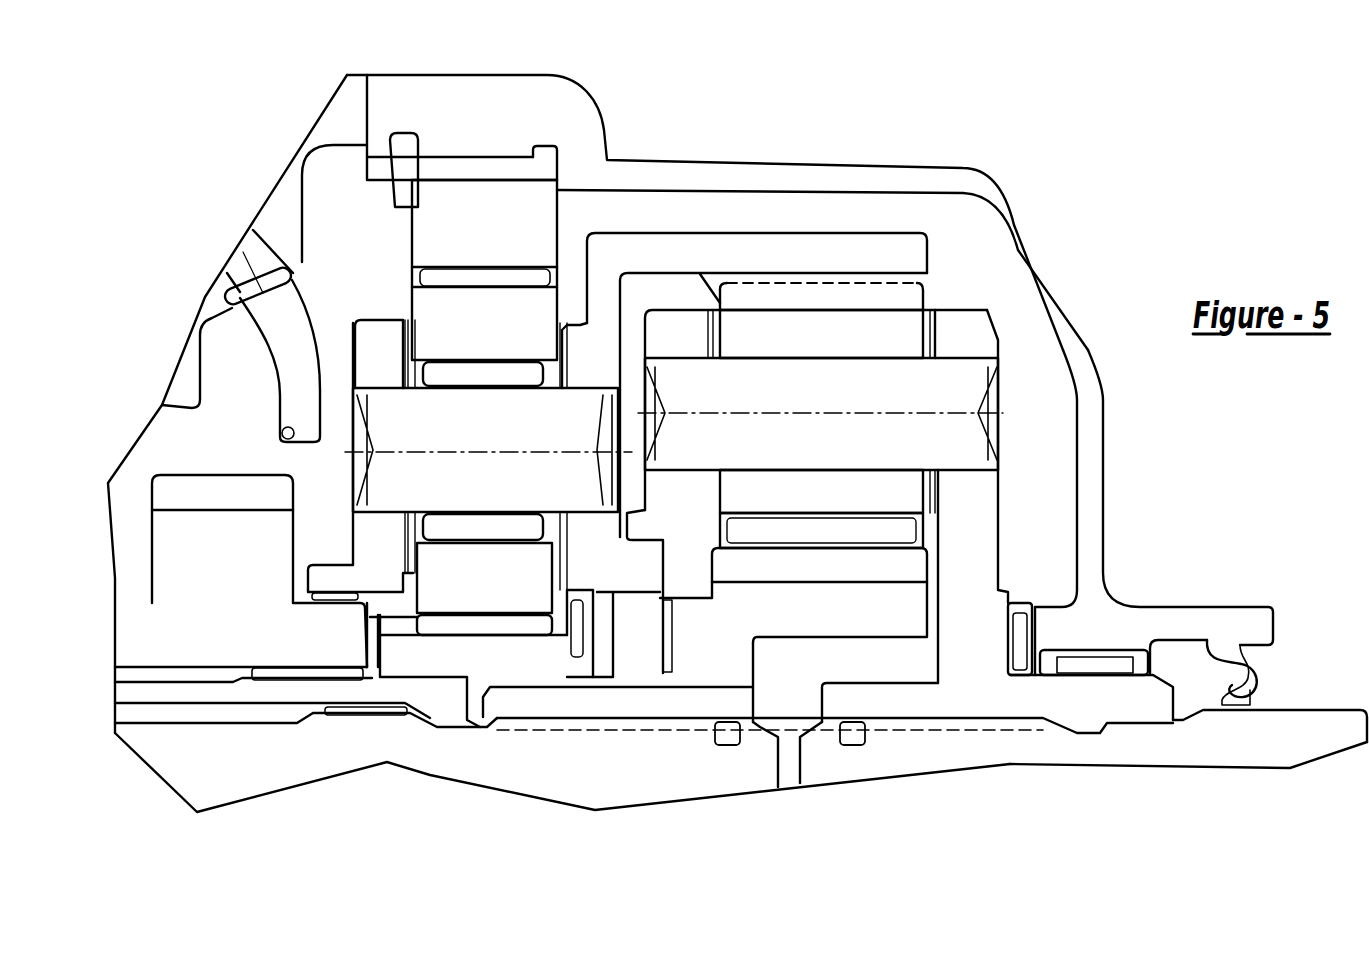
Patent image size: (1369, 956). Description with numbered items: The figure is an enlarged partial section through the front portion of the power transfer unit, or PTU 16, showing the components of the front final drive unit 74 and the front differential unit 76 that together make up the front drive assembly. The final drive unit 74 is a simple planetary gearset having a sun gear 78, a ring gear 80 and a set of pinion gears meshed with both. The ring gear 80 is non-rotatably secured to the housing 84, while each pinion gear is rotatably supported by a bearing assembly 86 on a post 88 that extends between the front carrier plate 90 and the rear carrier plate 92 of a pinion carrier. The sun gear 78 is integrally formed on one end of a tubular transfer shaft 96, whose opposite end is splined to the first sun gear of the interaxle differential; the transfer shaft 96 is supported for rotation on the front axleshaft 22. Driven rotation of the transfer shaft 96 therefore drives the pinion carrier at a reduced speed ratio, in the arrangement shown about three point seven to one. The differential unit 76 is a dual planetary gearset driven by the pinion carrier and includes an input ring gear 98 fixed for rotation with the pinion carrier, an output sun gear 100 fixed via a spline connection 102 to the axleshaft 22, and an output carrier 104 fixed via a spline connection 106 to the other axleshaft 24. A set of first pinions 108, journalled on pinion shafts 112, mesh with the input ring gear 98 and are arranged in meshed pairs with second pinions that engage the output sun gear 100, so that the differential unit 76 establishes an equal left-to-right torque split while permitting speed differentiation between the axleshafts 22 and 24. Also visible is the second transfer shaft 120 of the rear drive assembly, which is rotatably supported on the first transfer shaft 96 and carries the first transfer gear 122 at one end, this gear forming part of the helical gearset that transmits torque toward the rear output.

The PTU 16 is at (1018, 183).
The front axleshaft 22 is at (305, 750).
The axleshaft 24 is at (1303, 740).
The final drive unit 74 is at (493, 180).
The differential unit 76 is at (870, 236).
The sun gear 78 is at (443, 678).
The ring gear 80 is at (537, 225).
The housing 84 is at (1070, 340).
The bearing assembly 86 is at (478, 374).
The post 88 is at (497, 499).
The front carrier plate 90 is at (357, 533).
The rear carrier plate 92 is at (633, 642).
The tubular transfer shaft 96 is at (190, 692).
The input ring gear 98 is at (748, 257).
The output sun gear 100 is at (788, 602).
The spline connection 102 is at (677, 728).
The output carrier 104 is at (978, 537).
The spline connection 106 is at (938, 728).
The first pinions 108 is at (908, 335).
The pinion shafts 112 is at (833, 401).
The second transfer shaft 120 is at (163, 630).
The first transfer gear 122 is at (237, 520).